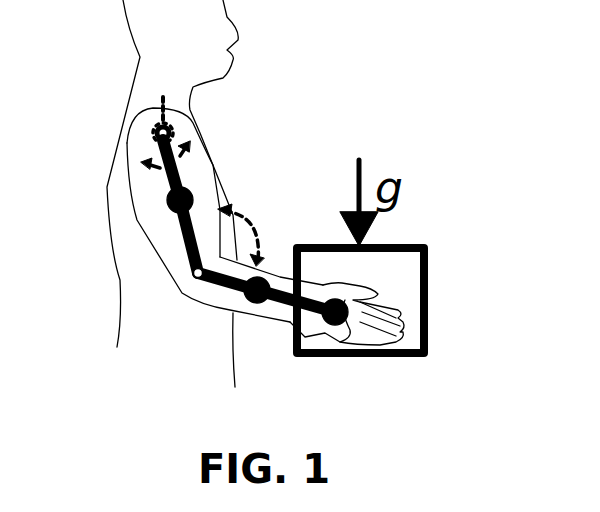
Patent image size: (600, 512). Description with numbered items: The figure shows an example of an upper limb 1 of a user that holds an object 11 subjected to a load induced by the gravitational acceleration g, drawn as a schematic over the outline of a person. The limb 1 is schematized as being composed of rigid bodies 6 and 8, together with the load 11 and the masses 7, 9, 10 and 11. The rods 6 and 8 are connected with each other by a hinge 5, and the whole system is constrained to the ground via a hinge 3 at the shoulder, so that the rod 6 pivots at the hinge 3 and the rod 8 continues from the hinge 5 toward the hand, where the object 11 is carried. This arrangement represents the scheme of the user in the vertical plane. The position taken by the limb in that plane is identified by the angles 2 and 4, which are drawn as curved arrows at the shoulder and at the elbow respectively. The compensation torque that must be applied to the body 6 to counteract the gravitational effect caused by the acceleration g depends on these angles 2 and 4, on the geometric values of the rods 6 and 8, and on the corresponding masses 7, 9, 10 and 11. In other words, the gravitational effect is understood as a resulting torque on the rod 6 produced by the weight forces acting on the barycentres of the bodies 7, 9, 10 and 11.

The upper limb 1 is at (116, 170).
The angle 2 is at (196, 168).
The hinge 3 is at (162, 118).
The angle 4 is at (252, 226).
The hinge 5 is at (192, 273).
The rigid body 6 is at (165, 170).
The mass 7 is at (172, 210).
The rigid body 8 is at (218, 292).
The mass 9 is at (252, 298).
The mass 10 is at (298, 342).
The object 11 is at (427, 273).